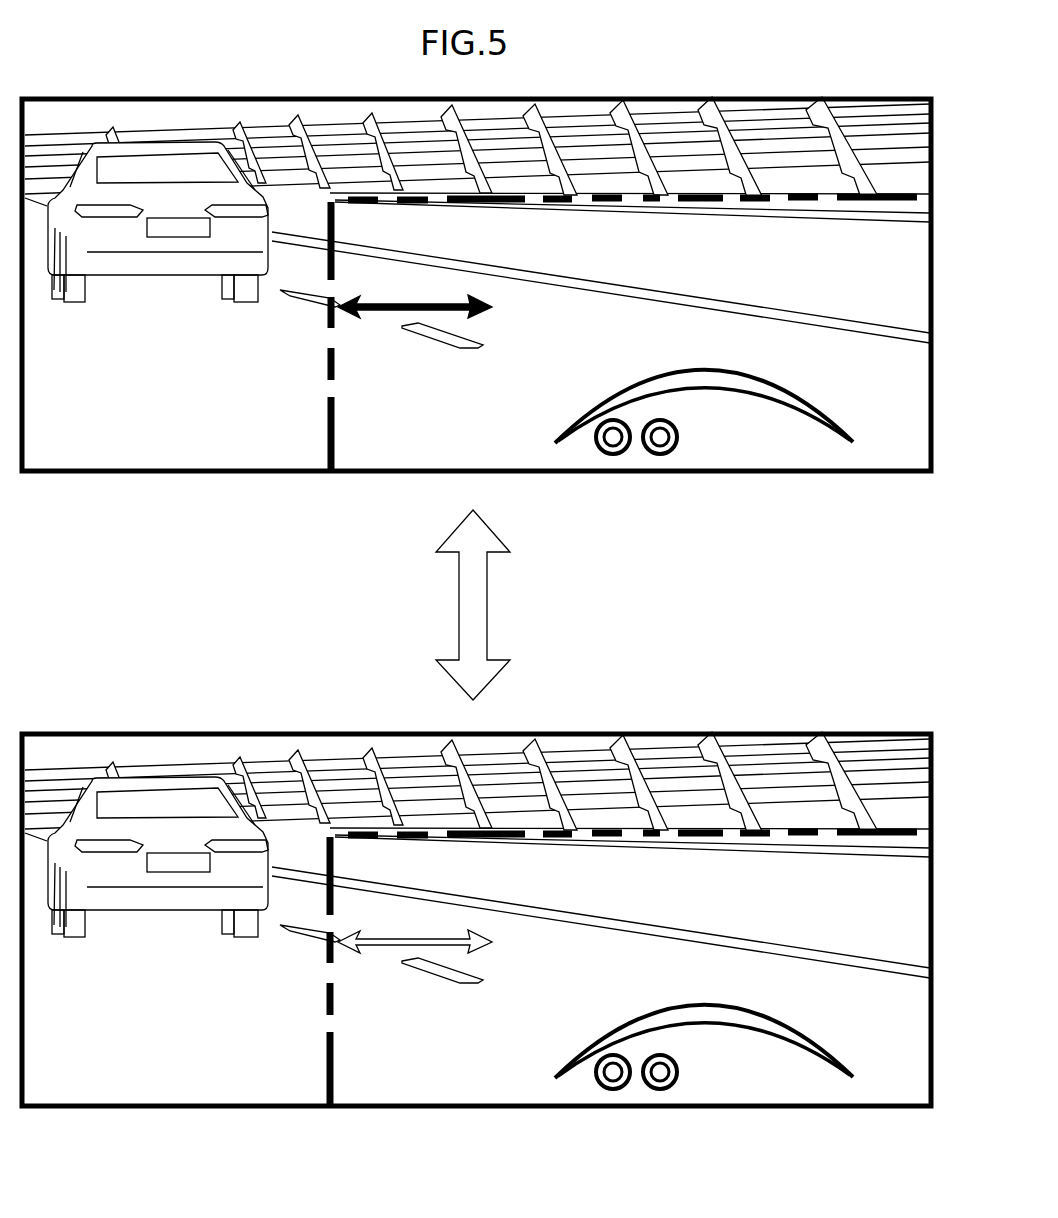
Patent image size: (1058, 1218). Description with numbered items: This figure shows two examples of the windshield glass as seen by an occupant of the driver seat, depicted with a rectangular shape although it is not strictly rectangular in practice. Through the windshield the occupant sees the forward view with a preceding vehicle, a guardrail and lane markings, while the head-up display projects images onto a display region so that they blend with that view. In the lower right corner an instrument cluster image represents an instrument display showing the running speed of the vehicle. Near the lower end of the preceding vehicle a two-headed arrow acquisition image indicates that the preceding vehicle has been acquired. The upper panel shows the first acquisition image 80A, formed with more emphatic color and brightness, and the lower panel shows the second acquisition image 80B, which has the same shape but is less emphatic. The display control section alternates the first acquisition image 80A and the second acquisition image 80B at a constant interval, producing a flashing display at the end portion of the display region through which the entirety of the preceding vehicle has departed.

The first acquisition image 80A is at (405, 310).
The second acquisition image 80B is at (348, 1070).